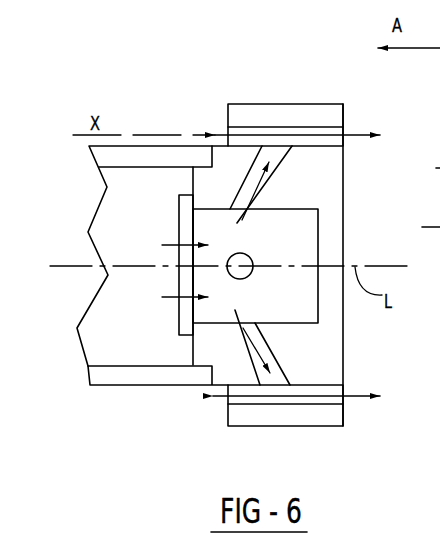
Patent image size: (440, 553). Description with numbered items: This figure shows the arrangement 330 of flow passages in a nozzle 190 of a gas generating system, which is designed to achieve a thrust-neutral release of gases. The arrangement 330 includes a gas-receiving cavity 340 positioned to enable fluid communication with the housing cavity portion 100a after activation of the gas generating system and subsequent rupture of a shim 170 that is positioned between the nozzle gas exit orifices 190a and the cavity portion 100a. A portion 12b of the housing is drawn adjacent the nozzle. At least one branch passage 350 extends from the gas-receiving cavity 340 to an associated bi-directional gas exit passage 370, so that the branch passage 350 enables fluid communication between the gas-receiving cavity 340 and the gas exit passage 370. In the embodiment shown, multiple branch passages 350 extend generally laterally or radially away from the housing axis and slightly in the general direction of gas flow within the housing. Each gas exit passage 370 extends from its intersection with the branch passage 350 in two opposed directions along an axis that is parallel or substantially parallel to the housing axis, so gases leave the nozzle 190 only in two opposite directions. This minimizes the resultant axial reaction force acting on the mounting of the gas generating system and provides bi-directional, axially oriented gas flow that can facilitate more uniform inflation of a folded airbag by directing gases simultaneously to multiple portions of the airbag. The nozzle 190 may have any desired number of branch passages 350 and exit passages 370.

The second wall portion of housing 12b is at (136, 158).
The housing cavity portion 100a is at (128, 330).
The shim 170 is at (187, 219).
The nozzle 190 is at (347, 345).
The nozzle gas exit orifices 190a is at (228, 127).
The arrangement of flow passages 330 is at (273, 250).
The gas-receiving cavity 340 is at (297, 233).
The branch passage 350 is at (275, 166).
The bi-directional gas exit passage 370 is at (272, 132).